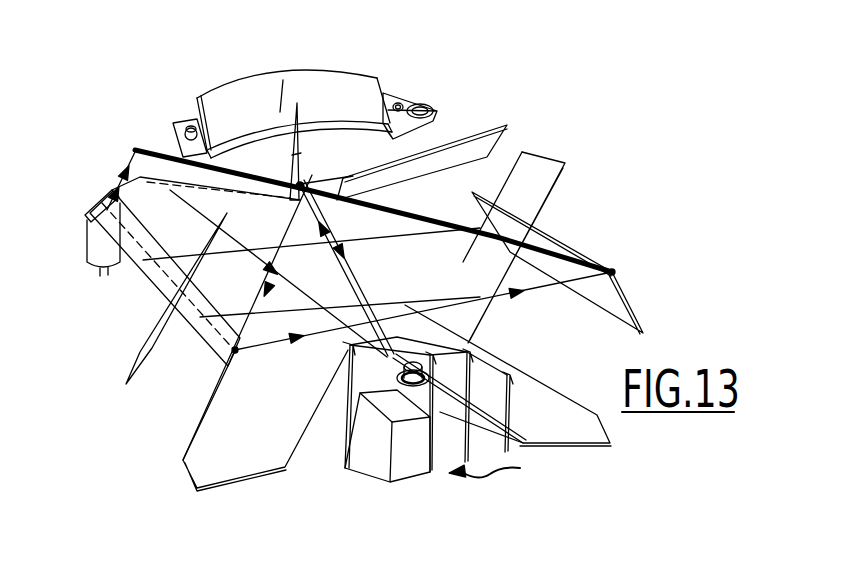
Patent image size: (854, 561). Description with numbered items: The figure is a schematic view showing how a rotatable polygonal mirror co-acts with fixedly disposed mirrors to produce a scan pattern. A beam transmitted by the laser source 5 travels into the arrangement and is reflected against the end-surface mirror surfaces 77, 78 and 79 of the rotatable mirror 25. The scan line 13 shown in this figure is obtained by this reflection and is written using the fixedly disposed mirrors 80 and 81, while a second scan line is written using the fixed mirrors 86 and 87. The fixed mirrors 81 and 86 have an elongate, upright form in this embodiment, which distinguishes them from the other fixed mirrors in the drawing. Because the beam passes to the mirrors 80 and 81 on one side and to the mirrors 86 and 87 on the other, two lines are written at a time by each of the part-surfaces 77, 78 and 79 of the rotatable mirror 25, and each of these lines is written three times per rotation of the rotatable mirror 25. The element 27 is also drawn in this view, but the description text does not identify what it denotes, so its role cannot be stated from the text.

The arcuate plate 27 is at (327, 83).
The fixed mirror 87 is at (417, 170).
The fixed mirror 86 is at (553, 190).
The scan line 13 is at (460, 237).
The fixed mirror 80 is at (293, 196).
The laser source 5 is at (97, 248).
The fixed mirror 81 is at (140, 267).
The mirror surface 77 is at (377, 368).
The mirror surface 78 is at (373, 450).
The mirror surface 79 is at (497, 405).
The rotatable mirror 25 is at (499, 467).